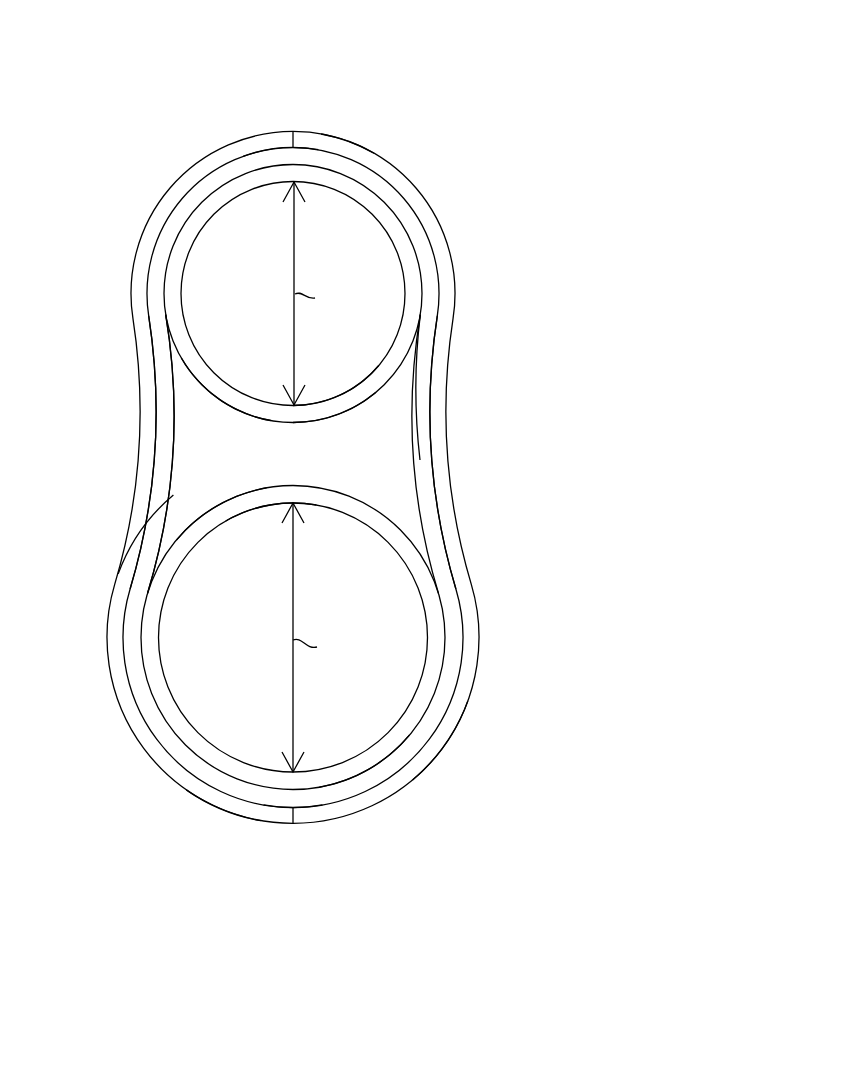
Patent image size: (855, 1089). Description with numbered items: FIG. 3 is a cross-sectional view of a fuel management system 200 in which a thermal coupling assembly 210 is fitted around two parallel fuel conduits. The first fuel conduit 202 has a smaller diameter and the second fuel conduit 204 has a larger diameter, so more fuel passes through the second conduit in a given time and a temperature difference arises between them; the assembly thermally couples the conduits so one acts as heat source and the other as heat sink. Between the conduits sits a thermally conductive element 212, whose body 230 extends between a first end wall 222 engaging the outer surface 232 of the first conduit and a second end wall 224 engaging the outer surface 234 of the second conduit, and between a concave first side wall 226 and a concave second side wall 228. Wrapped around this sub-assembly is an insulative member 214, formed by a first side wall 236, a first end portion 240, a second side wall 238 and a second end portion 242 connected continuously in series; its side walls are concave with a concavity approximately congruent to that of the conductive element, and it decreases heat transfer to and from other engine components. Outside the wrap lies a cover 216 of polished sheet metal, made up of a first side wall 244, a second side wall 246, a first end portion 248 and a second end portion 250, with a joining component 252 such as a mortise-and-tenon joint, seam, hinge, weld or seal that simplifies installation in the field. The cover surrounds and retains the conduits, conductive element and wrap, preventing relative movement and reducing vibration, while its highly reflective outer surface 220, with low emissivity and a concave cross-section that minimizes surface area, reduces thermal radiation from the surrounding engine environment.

The fuel management system 200 is at (449, 78).
The first fuel conduit 202 is at (387, 217).
The second fuel conduit 204 is at (390, 537).
The thermal coupling assembly 210 is at (479, 386).
The thermally conductive element 212 is at (402, 473).
The insulative member 214 is at (438, 547).
The cover 216 is at (467, 602).
The highly reflective surface 220 is at (457, 727).
The first end wall 222 is at (210, 395).
The second end wall 224 is at (230, 498).
The first side wall 226 is at (177, 455).
The second side wall 228 is at (413, 423).
The body 230 is at (313, 466).
The outer surface 232 is at (342, 406).
The outer surface 234 is at (262, 492).
The first side wall 236 is at (167, 442).
The second side wall 238 is at (422, 435).
The first end portion 240 is at (260, 160).
The second end portion 242 is at (389, 769).
The first side wall 244 is at (130, 552).
The second side wall 246 is at (447, 510).
The first end portion 248 is at (345, 141).
The second end portion 250 is at (231, 806).
The joining component 252 is at (299, 819).